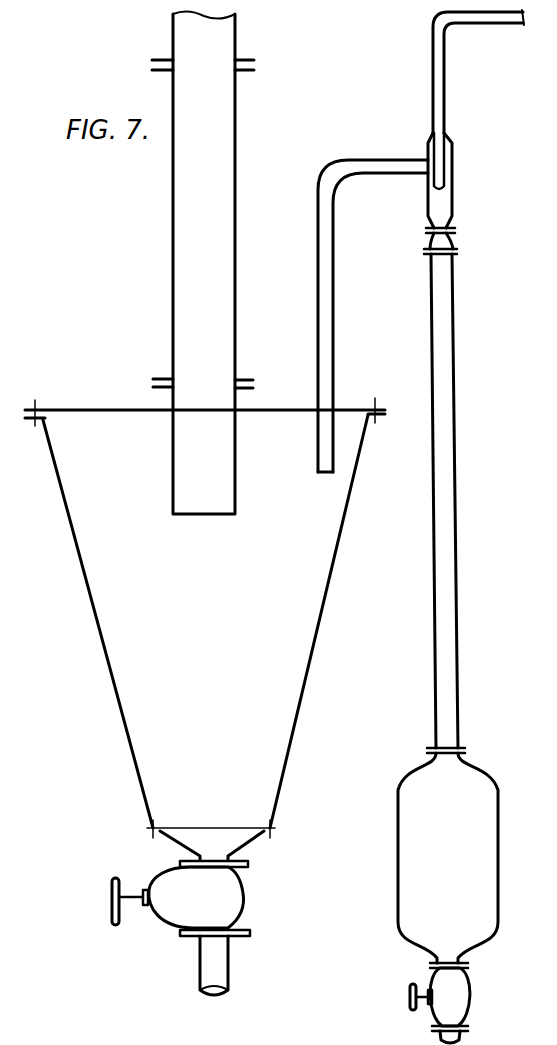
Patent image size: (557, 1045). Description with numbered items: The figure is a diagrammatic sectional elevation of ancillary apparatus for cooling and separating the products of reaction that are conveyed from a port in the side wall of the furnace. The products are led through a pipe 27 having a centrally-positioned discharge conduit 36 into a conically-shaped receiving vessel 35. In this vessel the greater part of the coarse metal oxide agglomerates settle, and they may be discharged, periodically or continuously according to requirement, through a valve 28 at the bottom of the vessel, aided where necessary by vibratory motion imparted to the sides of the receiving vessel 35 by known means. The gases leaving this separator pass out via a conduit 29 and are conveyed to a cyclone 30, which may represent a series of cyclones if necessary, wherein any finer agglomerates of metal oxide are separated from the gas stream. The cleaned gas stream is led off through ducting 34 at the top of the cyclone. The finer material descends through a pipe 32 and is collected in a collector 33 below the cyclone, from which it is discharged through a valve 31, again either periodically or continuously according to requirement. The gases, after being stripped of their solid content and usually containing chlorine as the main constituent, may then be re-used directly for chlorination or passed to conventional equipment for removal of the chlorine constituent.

The pipe 27 is at (185, 38).
The valve 28 is at (235, 897).
The conduit 29 is at (318, 203).
The cyclone 30 is at (453, 189).
The valve 31 is at (465, 989).
The pipe 32 is at (457, 572).
The collector 33 is at (485, 822).
The ducting 34 is at (490, 22).
The conically-shaped receiving vessel 35 is at (150, 614).
The centrally-positioned discharge conduit 36 is at (205, 473).